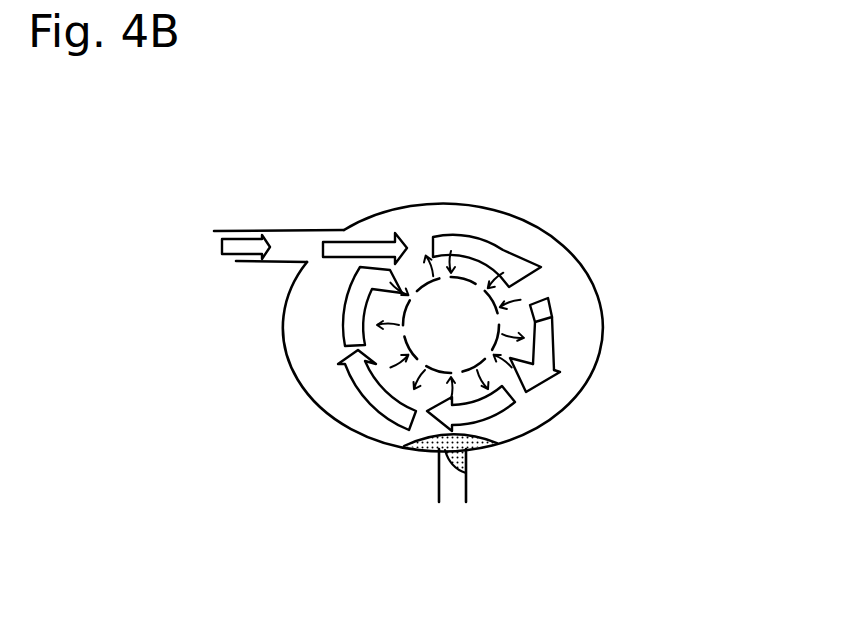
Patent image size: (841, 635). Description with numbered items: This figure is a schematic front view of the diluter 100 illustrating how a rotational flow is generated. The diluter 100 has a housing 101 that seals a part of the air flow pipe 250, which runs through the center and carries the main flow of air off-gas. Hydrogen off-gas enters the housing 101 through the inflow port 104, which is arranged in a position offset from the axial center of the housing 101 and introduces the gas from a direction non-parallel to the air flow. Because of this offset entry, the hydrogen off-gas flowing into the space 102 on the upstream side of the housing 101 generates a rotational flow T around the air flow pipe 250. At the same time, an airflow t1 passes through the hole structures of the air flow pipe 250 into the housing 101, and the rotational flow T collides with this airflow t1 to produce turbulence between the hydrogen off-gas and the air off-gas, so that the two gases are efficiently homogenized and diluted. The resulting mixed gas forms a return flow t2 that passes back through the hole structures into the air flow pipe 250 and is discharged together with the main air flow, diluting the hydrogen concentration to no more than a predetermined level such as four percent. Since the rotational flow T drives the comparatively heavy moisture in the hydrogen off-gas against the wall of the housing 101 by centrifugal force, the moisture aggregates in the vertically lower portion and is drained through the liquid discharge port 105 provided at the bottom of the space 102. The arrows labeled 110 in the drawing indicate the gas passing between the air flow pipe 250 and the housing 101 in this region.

The diluter 100 is at (484, 108).
The housing 101 is at (591, 275).
The space 102 is at (457, 237).
The inflow port 104 is at (266, 240).
The liquid discharge port 105 is at (467, 488).
The gas jets 110 is at (497, 292).
The air flow pipe 250 is at (522, 275).
The rotational flow T is at (552, 306).
The airflow t1 is at (503, 327).
The return flow t2 is at (505, 350).